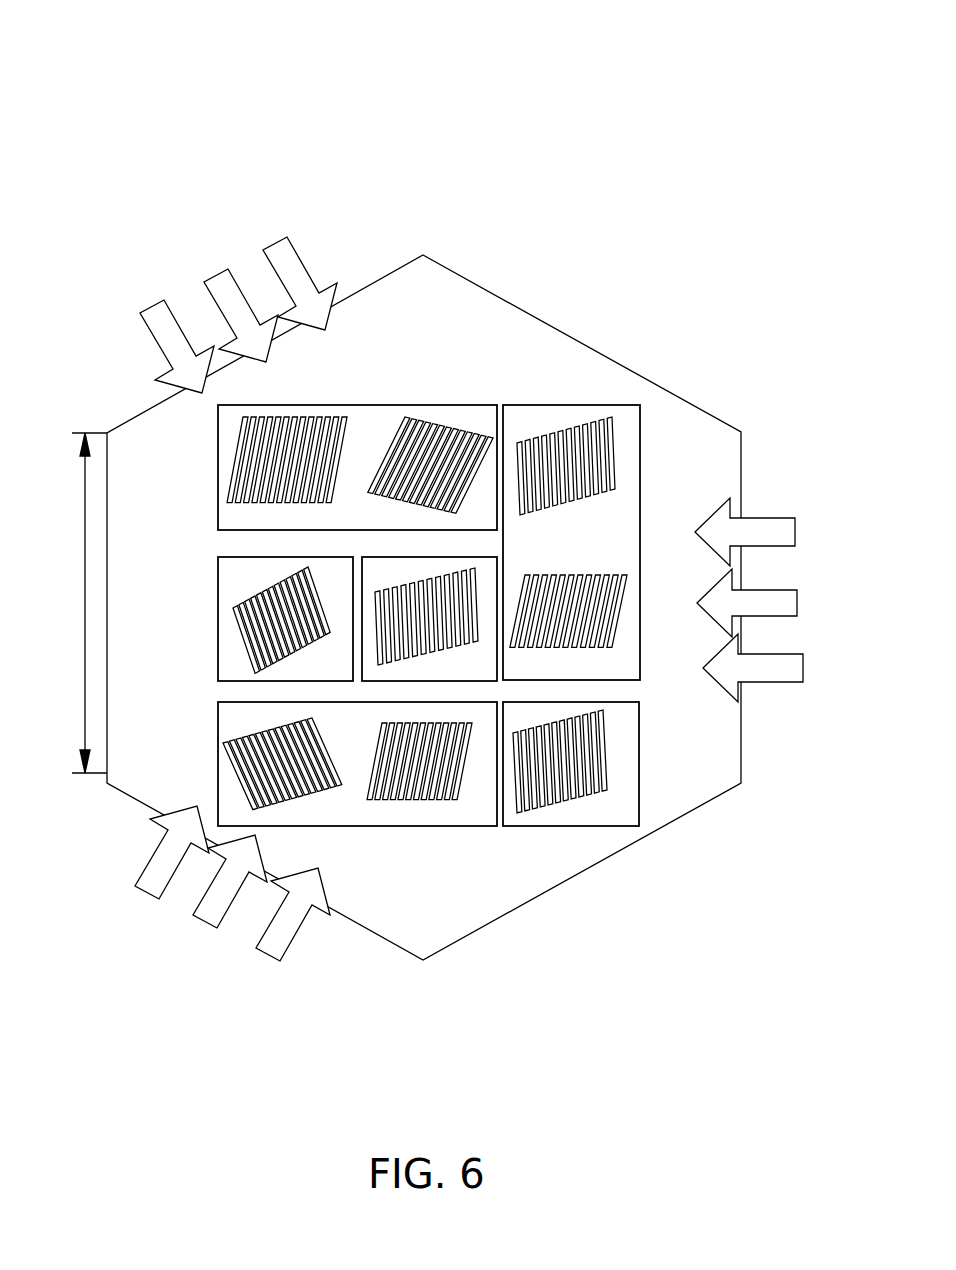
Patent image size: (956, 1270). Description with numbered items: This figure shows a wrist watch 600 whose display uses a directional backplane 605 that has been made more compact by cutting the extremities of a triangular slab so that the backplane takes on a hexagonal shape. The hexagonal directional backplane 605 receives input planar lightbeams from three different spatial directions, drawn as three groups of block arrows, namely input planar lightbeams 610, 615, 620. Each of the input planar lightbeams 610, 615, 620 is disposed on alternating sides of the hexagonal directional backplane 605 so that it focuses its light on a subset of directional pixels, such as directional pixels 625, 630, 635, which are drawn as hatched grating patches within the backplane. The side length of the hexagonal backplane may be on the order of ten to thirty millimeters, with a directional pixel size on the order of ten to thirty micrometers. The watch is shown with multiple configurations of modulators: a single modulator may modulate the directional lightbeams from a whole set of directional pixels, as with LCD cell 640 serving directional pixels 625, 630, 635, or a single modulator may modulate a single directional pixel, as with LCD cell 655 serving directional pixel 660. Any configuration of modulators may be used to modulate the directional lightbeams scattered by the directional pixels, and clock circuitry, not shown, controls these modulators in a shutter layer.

The wrist watch 600 is at (451, 68).
The directional backplane 605 is at (490, 348).
The input planar lightbeam 610 is at (293, 272).
The input planar lightbeam 615 is at (763, 527).
The input planar lightbeam 620 is at (157, 877).
The directional pixel 625 is at (275, 432).
The directional pixel 630 is at (463, 453).
The directional pixel 635 is at (573, 442).
The LCD cell 640 is at (388, 429).
The LCD cell 655 is at (243, 601).
The directional pixel 660 is at (253, 658).